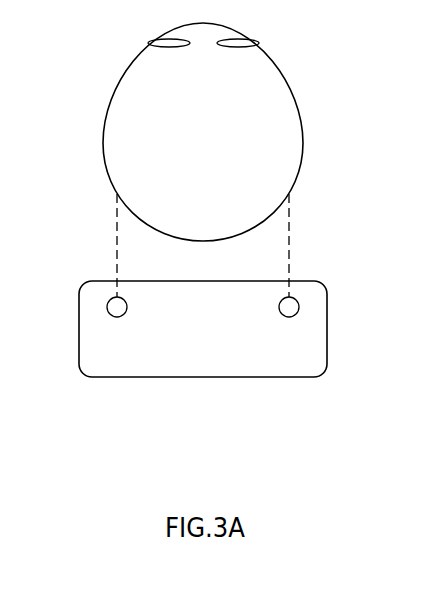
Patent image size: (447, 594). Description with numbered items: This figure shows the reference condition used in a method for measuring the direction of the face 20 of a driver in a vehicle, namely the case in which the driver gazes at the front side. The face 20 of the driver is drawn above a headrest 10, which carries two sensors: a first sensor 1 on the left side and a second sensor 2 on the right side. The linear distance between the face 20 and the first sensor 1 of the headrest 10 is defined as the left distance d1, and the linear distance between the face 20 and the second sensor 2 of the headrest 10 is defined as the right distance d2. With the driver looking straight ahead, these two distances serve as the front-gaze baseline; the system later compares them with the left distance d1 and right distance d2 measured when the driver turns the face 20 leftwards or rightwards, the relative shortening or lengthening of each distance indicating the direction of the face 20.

The face of a driver 20 is at (293, 122).
The headrest 10 is at (213, 363).
The first sensor 1 is at (107, 305).
The second sensor 2 is at (299, 306).
The left distance d1 is at (101, 245).
The right distance d2 is at (304, 245).